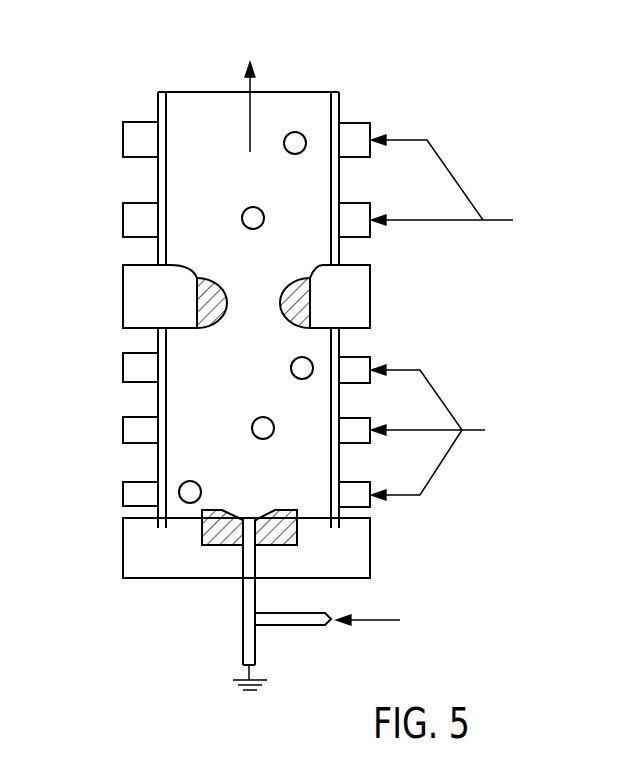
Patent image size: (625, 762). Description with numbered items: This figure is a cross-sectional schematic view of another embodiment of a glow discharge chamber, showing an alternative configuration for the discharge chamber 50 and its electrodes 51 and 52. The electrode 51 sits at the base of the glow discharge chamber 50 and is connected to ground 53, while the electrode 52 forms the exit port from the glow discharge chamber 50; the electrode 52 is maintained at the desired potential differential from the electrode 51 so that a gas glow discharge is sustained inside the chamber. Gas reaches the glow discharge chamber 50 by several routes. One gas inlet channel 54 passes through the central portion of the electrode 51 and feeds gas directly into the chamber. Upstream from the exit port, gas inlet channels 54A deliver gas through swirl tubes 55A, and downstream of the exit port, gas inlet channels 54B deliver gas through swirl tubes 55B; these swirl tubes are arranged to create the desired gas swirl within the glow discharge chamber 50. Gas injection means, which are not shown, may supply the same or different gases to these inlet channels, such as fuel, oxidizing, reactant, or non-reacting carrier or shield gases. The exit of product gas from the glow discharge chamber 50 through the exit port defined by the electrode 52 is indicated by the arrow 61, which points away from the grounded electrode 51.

The discharge chamber 50 is at (243, 392).
The electrode 51 is at (202, 540).
The electrode 52 is at (207, 302).
The ground 53 is at (250, 692).
The gas inlet channel 54 is at (317, 627).
The gas inlet channels 54A is at (353, 383).
The gas inlet channels 54B is at (357, 157).
The swirl tubes 55A is at (302, 379).
The swirl tubes 55B is at (253, 207).
The arrow 61 is at (266, 106).